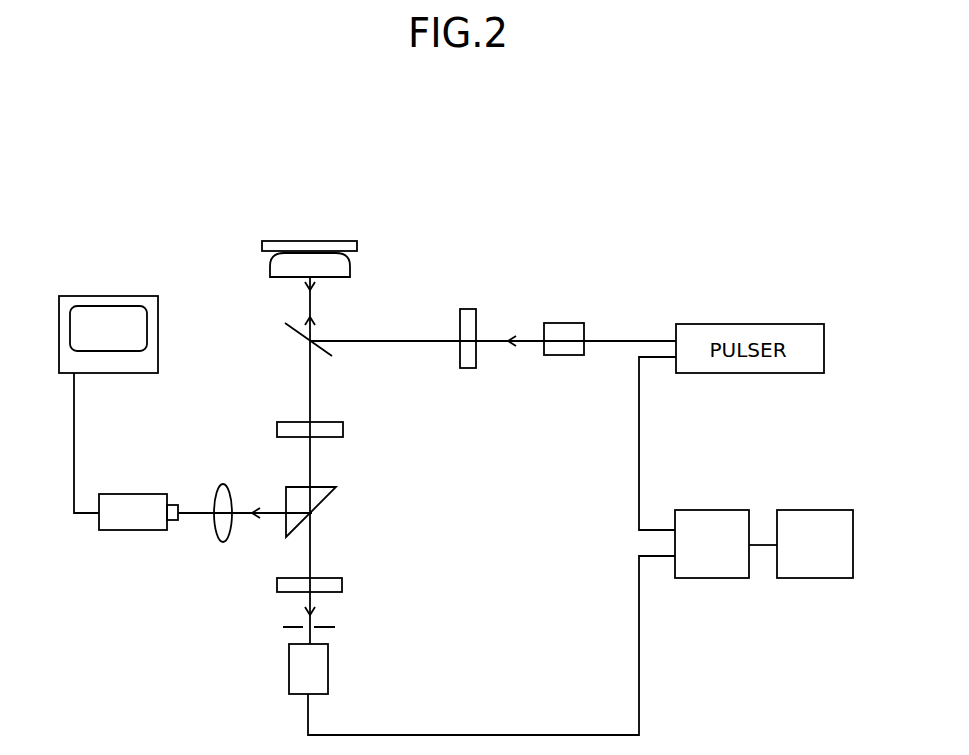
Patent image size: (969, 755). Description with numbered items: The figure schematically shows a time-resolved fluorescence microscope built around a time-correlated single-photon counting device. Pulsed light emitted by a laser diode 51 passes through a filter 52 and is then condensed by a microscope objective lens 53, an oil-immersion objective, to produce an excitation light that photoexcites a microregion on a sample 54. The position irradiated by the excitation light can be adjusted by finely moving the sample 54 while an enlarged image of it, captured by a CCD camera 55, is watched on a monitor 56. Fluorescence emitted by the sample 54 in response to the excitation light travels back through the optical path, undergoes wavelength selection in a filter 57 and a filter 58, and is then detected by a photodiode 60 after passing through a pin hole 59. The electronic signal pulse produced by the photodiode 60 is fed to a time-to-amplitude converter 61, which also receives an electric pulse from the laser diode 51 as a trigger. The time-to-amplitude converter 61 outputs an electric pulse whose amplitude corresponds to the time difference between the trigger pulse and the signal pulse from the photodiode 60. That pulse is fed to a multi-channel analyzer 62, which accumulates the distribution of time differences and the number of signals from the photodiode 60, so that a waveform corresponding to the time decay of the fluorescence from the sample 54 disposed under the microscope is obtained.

The laser diode 51 is at (572, 328).
The filter 52 is at (472, 313).
The microscope objective lens 53 is at (346, 272).
The sample 54 is at (337, 243).
The CCD camera 55 is at (142, 493).
The monitor 56 is at (132, 295).
The filter 57 is at (335, 429).
The filter 58 is at (332, 580).
The pin hole 59 is at (295, 626).
The photodiode 60 is at (290, 671).
The time-to-amplitude converter 61 is at (722, 513).
The multi-channel analyzer 62 is at (811, 514).